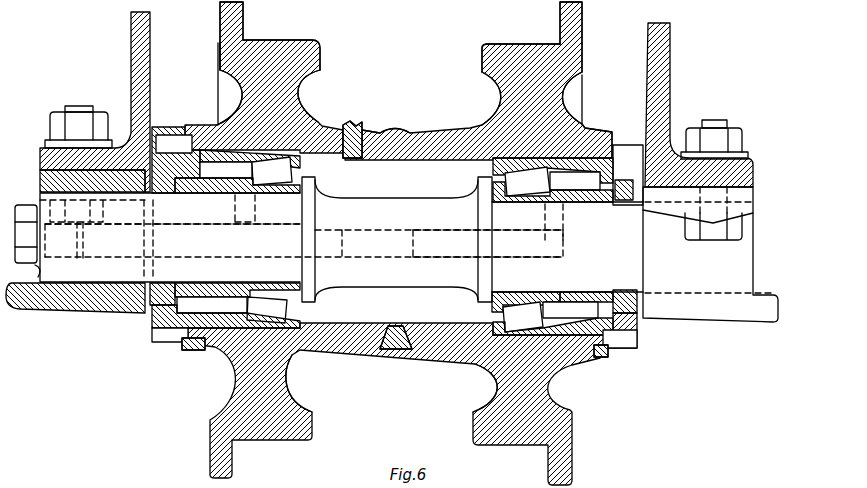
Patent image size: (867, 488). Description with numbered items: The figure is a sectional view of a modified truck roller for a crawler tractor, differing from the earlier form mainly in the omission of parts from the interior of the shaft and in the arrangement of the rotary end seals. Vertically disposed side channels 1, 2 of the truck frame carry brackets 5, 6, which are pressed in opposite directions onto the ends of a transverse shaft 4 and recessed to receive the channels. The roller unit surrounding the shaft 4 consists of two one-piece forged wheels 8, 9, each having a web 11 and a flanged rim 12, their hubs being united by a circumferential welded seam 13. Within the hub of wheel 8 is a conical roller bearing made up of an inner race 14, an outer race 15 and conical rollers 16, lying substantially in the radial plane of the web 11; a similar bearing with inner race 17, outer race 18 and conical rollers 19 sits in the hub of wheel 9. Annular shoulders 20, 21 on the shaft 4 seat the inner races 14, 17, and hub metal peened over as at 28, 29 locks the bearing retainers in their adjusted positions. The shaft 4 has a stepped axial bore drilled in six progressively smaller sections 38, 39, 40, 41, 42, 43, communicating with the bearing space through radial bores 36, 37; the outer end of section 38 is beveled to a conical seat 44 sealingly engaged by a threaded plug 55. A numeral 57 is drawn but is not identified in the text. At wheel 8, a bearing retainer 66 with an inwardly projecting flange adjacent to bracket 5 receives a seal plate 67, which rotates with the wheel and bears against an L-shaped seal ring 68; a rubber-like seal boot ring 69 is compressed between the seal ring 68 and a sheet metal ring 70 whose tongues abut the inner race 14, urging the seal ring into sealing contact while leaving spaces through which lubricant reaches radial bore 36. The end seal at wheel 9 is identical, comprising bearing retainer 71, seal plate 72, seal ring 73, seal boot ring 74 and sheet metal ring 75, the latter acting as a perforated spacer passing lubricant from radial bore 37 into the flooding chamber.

The channel 1 is at (131, 61).
The channel 2 is at (670, 60).
The shaft 4 is at (422, 205).
The bracket 5 is at (52, 309).
The bracket 6 is at (692, 321).
The wheel 8 is at (218, 67).
The wheel 9 is at (582, 81).
The web 11 is at (290, 92).
The flanged rim 12 is at (300, 42).
The welded seam 13 is at (398, 350).
The inner race 14 is at (296, 300).
The outer race 15 is at (292, 160).
The conical rollers 16 is at (237, 175).
The inner race 17 is at (493, 305).
The outer race 18 is at (500, 331).
The conical rollers 19 is at (550, 317).
The annular shoulder 20 is at (313, 189).
The annular shoulder 21 is at (488, 191).
The peened-over metal 28 is at (182, 346).
The peened-over metal 29 is at (603, 358).
The radial bore 36 is at (250, 213).
The radial bore 37 is at (549, 214).
The bore section 38 is at (120, 259).
The bore section 39 is at (205, 259).
The bore section 40 is at (346, 231).
The bore section 41 is at (390, 259).
The bore section 42 is at (467, 231).
The bore section 43 is at (542, 259).
The conical seat 44 is at (34, 268).
The plug 55 is at (26, 204).
The coupling key 57 is at (353, 125).
The bearing retainer 66 is at (188, 336).
The seal plate 67 is at (158, 296).
The seal ring 68 is at (185, 283).
The seal boot ring 69 is at (212, 305).
The sheet metal ring 70 is at (233, 184).
The bearing retainer 71 is at (604, 342).
The seal plate 72 is at (622, 292).
The seal ring 73 is at (625, 201).
The seal boot ring 74 is at (539, 292).
The sheet metal ring 75 is at (553, 177).